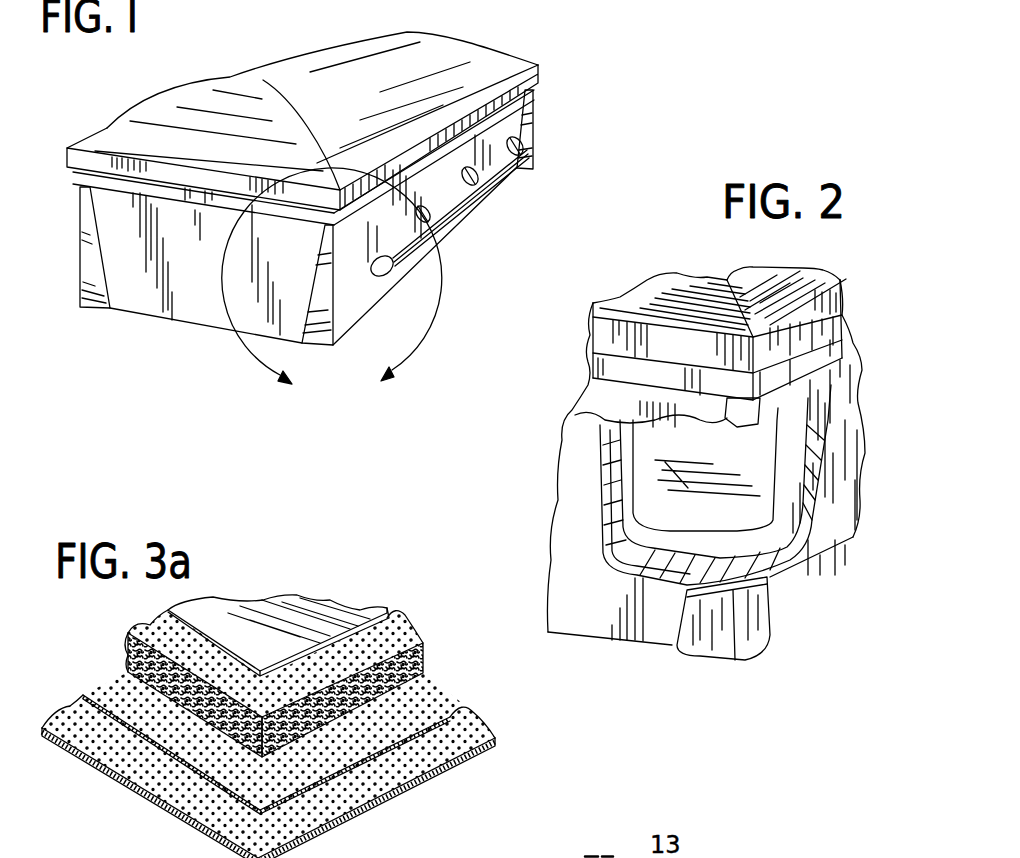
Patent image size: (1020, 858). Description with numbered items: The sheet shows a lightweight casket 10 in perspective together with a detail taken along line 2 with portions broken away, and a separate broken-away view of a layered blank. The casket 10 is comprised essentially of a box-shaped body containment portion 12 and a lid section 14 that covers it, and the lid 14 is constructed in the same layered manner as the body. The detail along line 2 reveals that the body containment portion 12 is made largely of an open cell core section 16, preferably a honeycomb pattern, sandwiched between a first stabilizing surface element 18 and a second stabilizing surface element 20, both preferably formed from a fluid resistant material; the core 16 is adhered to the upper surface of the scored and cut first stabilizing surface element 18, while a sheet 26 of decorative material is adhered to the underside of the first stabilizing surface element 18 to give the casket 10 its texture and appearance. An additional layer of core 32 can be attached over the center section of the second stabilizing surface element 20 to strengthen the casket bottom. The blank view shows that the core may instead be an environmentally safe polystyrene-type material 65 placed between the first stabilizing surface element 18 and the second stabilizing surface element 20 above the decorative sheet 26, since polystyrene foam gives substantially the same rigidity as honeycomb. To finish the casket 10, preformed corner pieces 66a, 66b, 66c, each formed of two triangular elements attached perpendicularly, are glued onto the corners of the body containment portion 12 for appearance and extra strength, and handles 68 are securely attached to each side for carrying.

In FIG. 1, the lightweight casket 10 is at (372, 25).
In FIG. 1, the body containment portion 12 is at (535, 116).
In FIG. 1, the lid section 14 is at (462, 53).
In FIG. 2, the lid section 14 is at (845, 294).
In FIG. 2, the open cell core section 16 is at (630, 523).
In FIG. 1, the first stabilizing surface element 18 is at (198, 287).
In FIG. 2, the first stabilizing surface element 18 is at (803, 521).
In FIG. 3A, the first stabilizing surface element 18 is at (455, 710).
In FIG. 2, the second stabilizing surface element 20 is at (766, 452).
In FIG. 3A, the second stabilizing surface element 20 is at (350, 612).
In FIG. 1, the sheet of decorative material 26 is at (128, 297).
In FIG. 2, the sheet of decorative material 26 is at (787, 592).
In FIG. 3A, the sheet of decorative material 26 is at (147, 777).
In FIG. 2, the additional layer of core 32 is at (655, 452).
In FIG. 3A, the polystyrene-type material 65 is at (425, 650).
In FIG. 1, the preformed corner piece 66a is at (83, 295).
In FIG. 1, the preformed corner piece 66b is at (348, 309).
In FIG. 2, the preformed corner piece 66b is at (753, 633).
In FIG. 1, the preformed corner piece 66c is at (535, 160).
In FIG. 1, the handles 68 is at (458, 210).
In FIG. 1, the line 2 is at (332, 283).